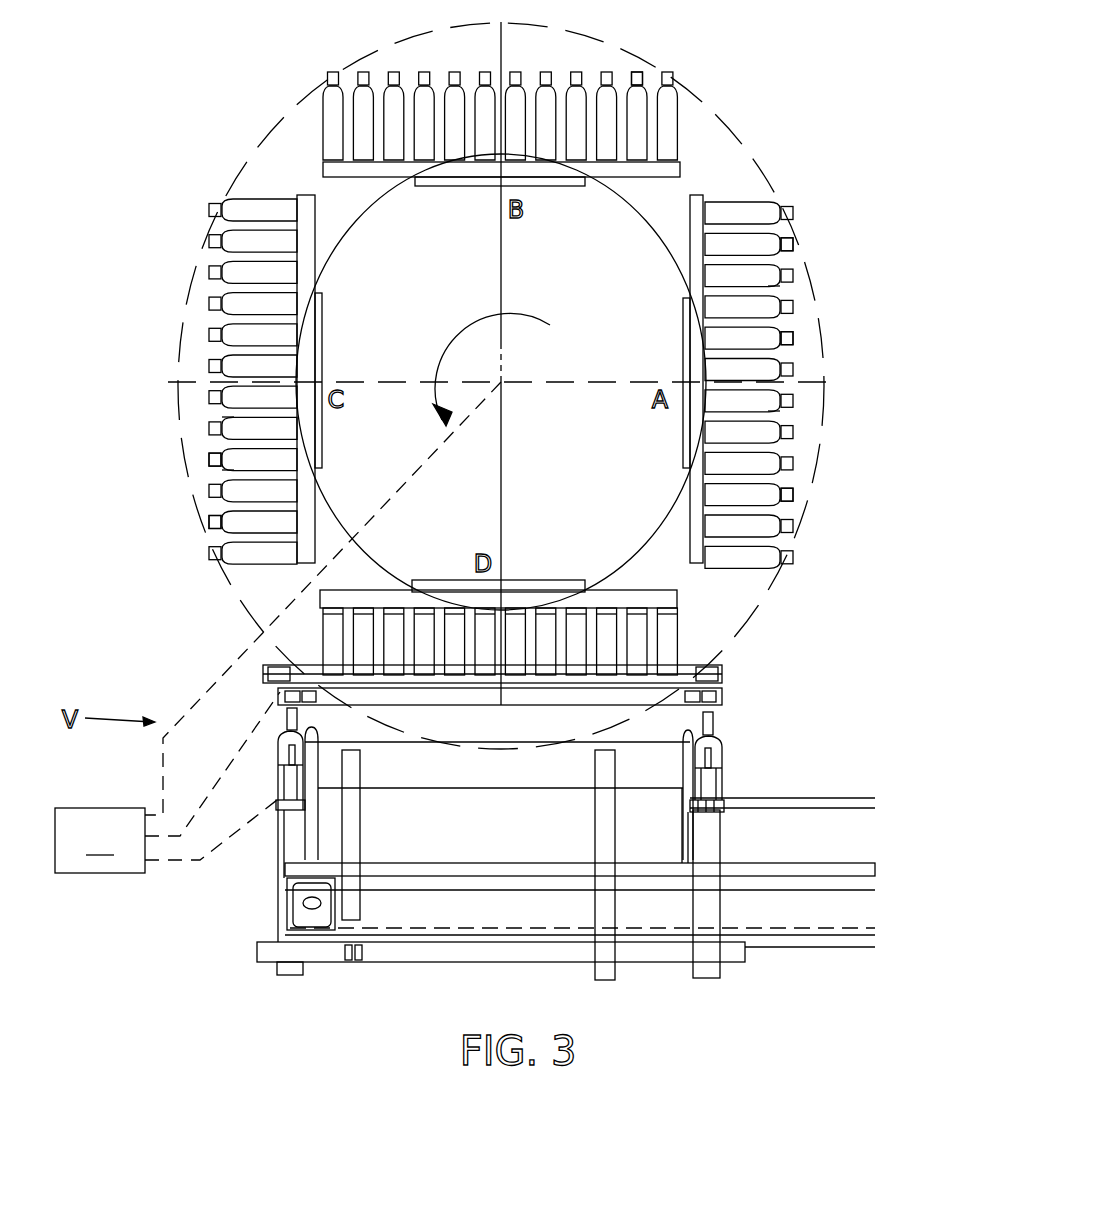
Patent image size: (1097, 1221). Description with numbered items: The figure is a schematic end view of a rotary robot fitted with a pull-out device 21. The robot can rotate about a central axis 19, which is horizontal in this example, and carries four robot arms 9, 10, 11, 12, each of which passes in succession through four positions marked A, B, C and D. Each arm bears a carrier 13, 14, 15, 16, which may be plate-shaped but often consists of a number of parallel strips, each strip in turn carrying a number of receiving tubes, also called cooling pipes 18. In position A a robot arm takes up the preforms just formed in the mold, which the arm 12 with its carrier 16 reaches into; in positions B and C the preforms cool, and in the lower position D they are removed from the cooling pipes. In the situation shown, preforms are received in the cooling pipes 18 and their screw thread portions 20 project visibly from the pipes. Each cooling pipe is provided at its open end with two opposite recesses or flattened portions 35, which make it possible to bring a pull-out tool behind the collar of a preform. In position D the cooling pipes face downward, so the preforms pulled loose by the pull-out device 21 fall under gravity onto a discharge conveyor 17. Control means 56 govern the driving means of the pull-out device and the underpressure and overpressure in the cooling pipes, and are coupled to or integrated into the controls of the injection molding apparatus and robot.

The robot arm 9 is at (458, 180).
The robot arm 10 is at (323, 328).
The robot arm 11 is at (532, 578).
The robot arm 12 is at (688, 358).
The carrier 13 is at (325, 160).
The carrier 14 is at (290, 562).
The carrier 15 is at (660, 598).
The carrier 16 is at (695, 260).
The discharge conveyor 17 is at (802, 823).
The cooling pipes 18 is at (733, 190).
The central axis 19 is at (503, 384).
The screw thread portions 20 is at (638, 78).
The pull-out device 21 is at (738, 690).
The flattened portions 35 is at (783, 293).
The control means 56 is at (278, 627).